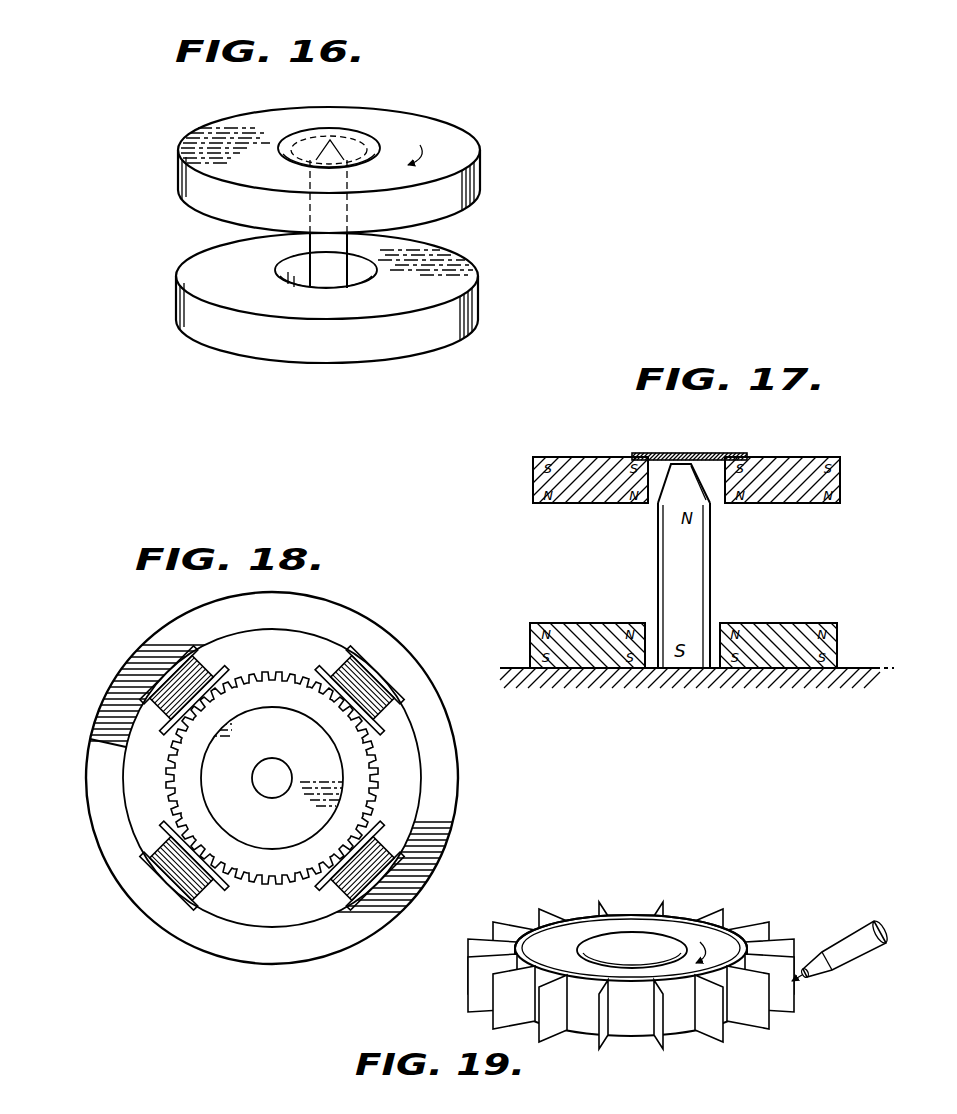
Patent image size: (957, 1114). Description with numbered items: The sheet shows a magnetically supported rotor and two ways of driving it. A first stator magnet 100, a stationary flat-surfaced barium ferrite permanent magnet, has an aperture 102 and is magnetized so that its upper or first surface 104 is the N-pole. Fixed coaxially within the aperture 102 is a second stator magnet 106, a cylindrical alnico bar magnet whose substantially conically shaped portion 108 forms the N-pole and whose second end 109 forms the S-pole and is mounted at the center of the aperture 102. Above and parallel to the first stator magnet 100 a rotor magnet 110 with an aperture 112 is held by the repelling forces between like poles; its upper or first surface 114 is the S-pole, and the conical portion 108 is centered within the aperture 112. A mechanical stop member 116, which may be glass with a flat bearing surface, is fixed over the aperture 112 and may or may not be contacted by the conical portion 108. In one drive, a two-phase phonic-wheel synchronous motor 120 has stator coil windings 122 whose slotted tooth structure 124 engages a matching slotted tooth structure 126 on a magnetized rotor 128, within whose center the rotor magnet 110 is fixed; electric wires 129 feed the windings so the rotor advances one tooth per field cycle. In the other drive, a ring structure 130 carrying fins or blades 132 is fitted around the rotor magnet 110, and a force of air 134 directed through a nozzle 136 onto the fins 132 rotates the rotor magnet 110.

In FIG. 16, the first stator magnet 100 is at (213, 332).
In FIG. 17, the first stator magnet 100 is at (590, 670).
In FIG. 16, the aperture 102 is at (277, 267).
In FIG. 17, the aperture 102 is at (717, 622).
In FIG. 16, the upper or first surface 104 is at (397, 307).
In FIG. 17, the upper or first surface 104 is at (586, 622).
In FIG. 16, the second stator magnet 106 is at (320, 278).
In FIG. 17, the second stator magnet 106 is at (672, 600).
In FIG. 16, the substantially conically shaped portion 108 is at (346, 138).
In FIG. 17, the substantially conically shaped portion 108 is at (676, 475).
In FIG. 17, the second end 109 is at (686, 670).
In FIG. 16, the rotor magnet 110 is at (185, 185).
In FIG. 17, the rotor magnet 110 is at (590, 468).
In FIG. 18, the rotor magnet 110 is at (218, 767).
In FIG. 19, the rotor magnet 110 is at (617, 920).
In FIG. 16, the aperture 112 is at (303, 137).
In FIG. 17, the aperture 112 is at (712, 500).
In FIG. 18, the aperture 112 is at (270, 782).
In FIG. 19, the aperture 112 is at (656, 946).
In FIG. 16, the upper or first surface 114 is at (290, 180).
In FIG. 17, the upper or first surface 114 is at (805, 465).
In FIG. 16, the mechanical stop member 116 is at (352, 143).
In FIG. 17, the mechanical stop member 116 is at (706, 456).
In FIG. 18, the two-phase phonic-wheel synchronous motor 120 is at (458, 778).
In FIG. 18, the stator coil windings 122 is at (178, 867).
In FIG. 18, the slotted tooth structure 124 is at (213, 872).
In FIG. 18, the slotted tooth structure 126 is at (254, 675).
In FIG. 18, the magnetized rotor 128 is at (283, 687).
In FIG. 18, the electric wires 129 is at (100, 740).
In FIG. 19, the ring structure 130 is at (708, 927).
In FIG. 19, the fins or blades 132 is at (631, 949).
In FIG. 19, the force of air 134 is at (796, 986).
In FIG. 19, the nozzle 136 is at (855, 950).